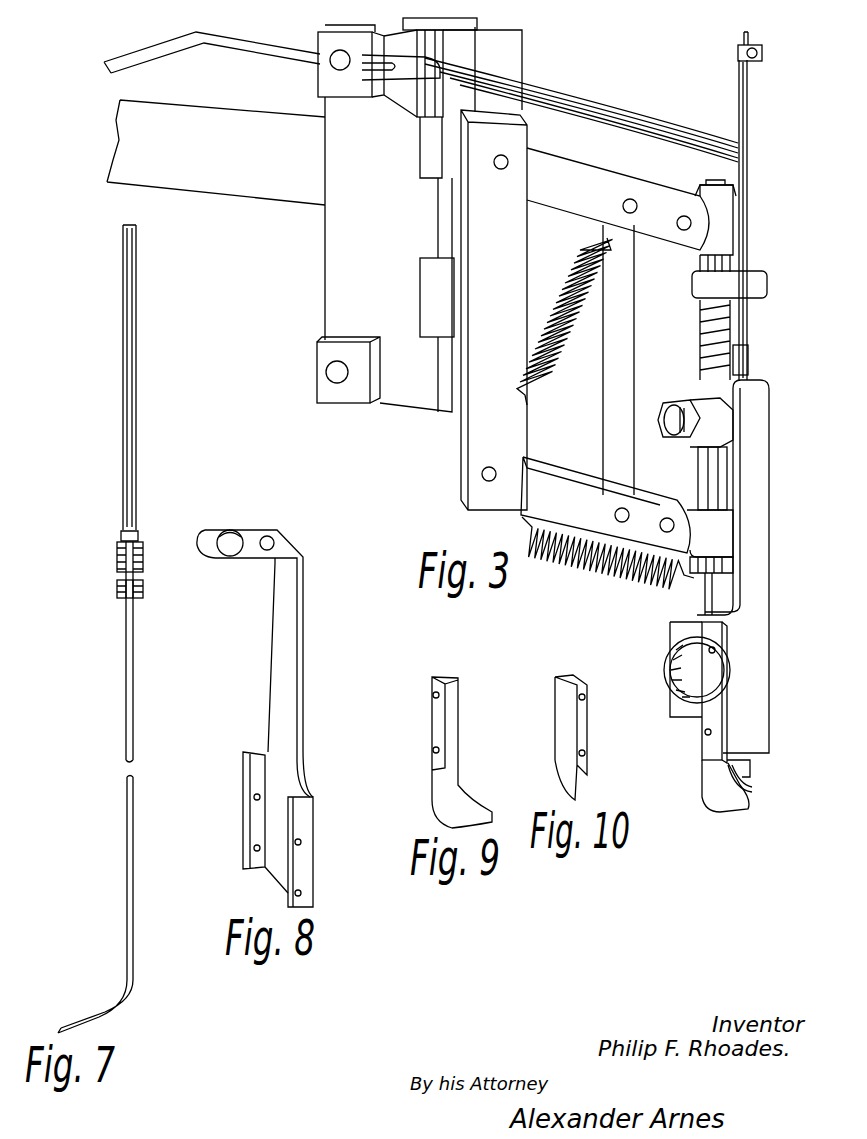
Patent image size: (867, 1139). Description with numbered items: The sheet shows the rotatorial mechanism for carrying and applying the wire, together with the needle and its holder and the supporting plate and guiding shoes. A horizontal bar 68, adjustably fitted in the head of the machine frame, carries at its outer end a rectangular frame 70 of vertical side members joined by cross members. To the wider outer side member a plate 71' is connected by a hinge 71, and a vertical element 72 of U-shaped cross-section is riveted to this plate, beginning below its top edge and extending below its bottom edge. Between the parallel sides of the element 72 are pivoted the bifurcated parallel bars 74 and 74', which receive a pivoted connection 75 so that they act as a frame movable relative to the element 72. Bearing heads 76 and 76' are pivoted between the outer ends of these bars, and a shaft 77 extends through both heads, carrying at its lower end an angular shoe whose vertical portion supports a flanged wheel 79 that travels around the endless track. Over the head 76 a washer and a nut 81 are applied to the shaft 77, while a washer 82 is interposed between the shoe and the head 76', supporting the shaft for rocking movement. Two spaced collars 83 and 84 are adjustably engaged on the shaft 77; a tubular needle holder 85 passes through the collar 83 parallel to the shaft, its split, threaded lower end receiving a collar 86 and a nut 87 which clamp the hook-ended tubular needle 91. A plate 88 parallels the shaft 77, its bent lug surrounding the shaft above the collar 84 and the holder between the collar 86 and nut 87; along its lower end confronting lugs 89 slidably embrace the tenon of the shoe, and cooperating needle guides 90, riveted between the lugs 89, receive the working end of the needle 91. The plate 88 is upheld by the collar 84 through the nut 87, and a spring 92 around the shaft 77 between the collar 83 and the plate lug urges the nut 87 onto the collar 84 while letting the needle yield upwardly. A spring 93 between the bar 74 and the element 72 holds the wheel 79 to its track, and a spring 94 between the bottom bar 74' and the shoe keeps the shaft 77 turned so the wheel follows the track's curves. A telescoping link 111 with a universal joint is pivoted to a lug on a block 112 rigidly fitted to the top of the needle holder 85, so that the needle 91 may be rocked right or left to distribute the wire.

In FIG. 3, the horizontal bar 68 is at (212, 193).
In FIG. 3, the rectangular frame 70 is at (338, 232).
In FIG. 3, the hinge 71 is at (385, 309).
In FIG. 3, the plate 71' is at (481, 64).
In FIG. 3, the vertical element 72 is at (515, 258).
In FIG. 3, the bar 74 is at (618, 199).
In FIG. 3, the bar 74' is at (605, 499).
In FIG. 3, the connection 75 is at (625, 356).
In FIG. 3, the bearing head 76 is at (737, 220).
In FIG. 3, the bearing head 76' is at (748, 533).
In FIG. 3, the shaft 77 is at (698, 480).
In FIG. 3, the flanged wheel 79 is at (690, 703).
In FIG. 3, the nut 81 is at (700, 196).
In FIG. 3, the washer 82 is at (733, 562).
In FIG. 3, the collar 83 is at (762, 291).
In FIG. 3, the collar 84 is at (692, 437).
In FIG. 7, the tubular needle holder 85 is at (138, 455).
In FIG. 3, the collar 86 is at (748, 360).
In FIG. 7, the collar 86 is at (143, 560).
In FIG. 7, the nut 87 is at (143, 592).
In FIG. 3, the plate 88 is at (769, 465).
In FIG. 8, the plate 88 is at (297, 660).
In FIG. 3, the lugs 89 is at (704, 737).
In FIG. 8, the lugs 89 is at (283, 790).
In FIG. 3, the needle guides 90 is at (692, 790).
In FIG. 9, the needle guides 90 is at (455, 708).
In FIG. 10, the needle guides 90 is at (565, 703).
In FIG. 3, the tubular needle 91 is at (752, 790).
In FIG. 7, the tubular needle 91 is at (126, 740).
In FIG. 3, the spring 92 is at (700, 308).
In FIG. 3, the spring 93 is at (560, 362).
In FIG. 3, the spring 94 is at (588, 568).
In FIG. 3, the telescoping link 111 is at (600, 118).
In FIG. 3, the block 112 is at (765, 152).